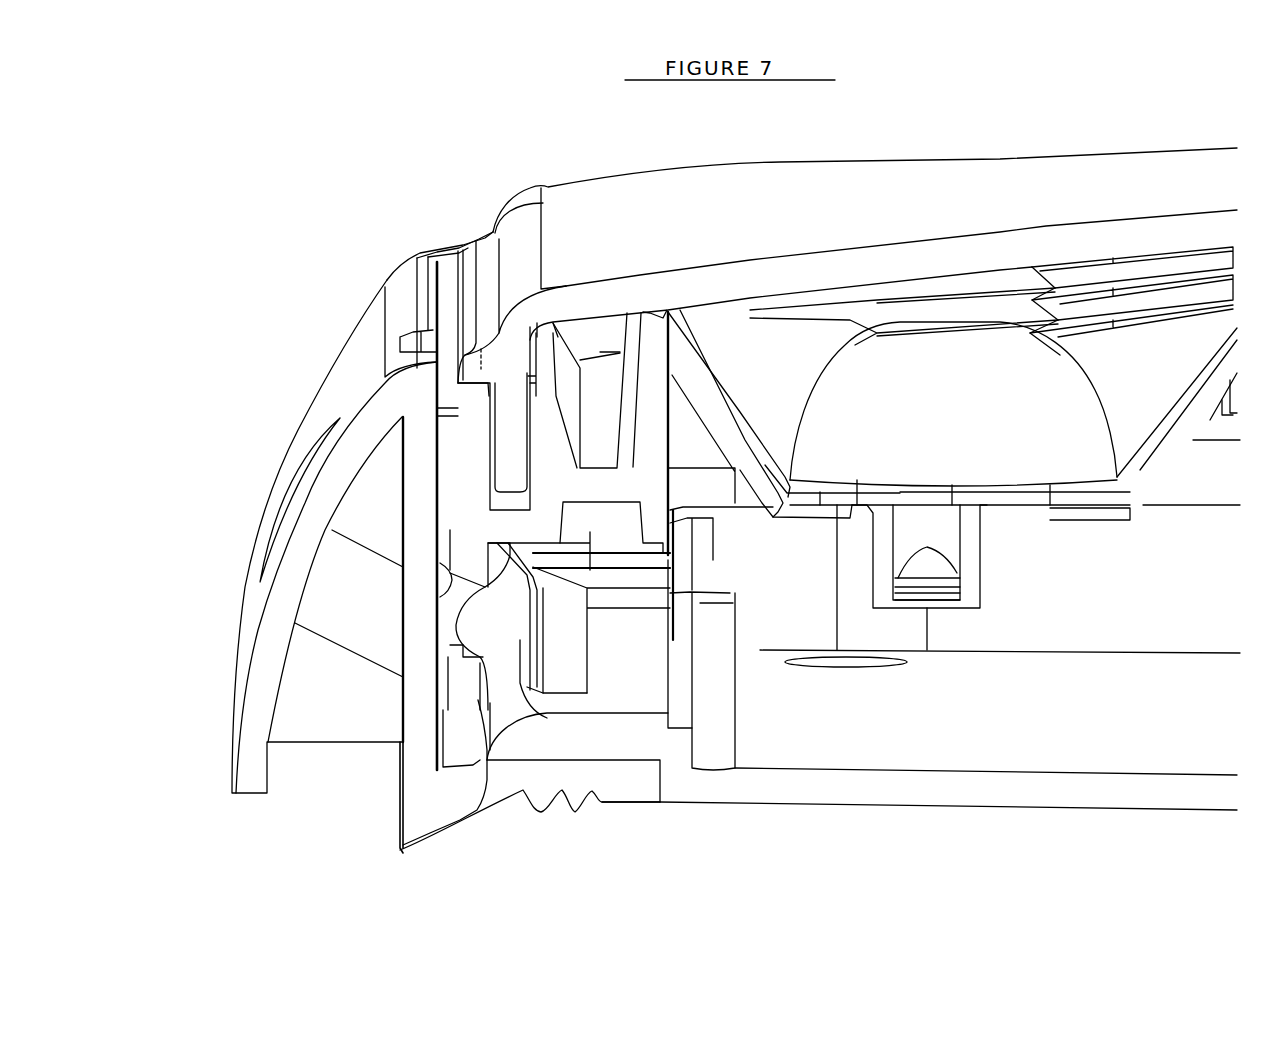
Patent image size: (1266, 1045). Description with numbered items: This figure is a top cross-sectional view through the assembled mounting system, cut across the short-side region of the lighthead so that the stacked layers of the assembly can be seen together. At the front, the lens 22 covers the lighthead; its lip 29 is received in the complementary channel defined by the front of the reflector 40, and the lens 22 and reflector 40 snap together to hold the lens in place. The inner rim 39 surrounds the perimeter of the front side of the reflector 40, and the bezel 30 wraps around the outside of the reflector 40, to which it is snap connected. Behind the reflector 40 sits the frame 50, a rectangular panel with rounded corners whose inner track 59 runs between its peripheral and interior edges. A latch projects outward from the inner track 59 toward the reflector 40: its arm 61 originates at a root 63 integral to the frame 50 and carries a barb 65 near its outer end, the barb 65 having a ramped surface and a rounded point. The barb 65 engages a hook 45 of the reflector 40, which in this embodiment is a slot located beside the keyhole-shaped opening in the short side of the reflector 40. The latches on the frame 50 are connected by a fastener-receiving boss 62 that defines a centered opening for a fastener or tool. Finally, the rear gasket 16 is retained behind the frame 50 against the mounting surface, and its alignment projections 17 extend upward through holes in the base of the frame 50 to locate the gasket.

The lens 22 is at (550, 172).
The bezel 30 is at (405, 246).
The reflector 40 is at (725, 370).
The inner rim 39 is at (548, 425).
The lip 29 is at (515, 471).
The barb 65 is at (493, 609).
The hook 45 is at (495, 653).
The arm 61 is at (500, 712).
The rear gasket 16 is at (493, 834).
The inner track 59 is at (543, 700).
The fastener-receiving boss 62 is at (568, 672).
The root 63 is at (642, 747).
The alignment projections 17 is at (917, 572).
The frame 50 is at (1133, 822).